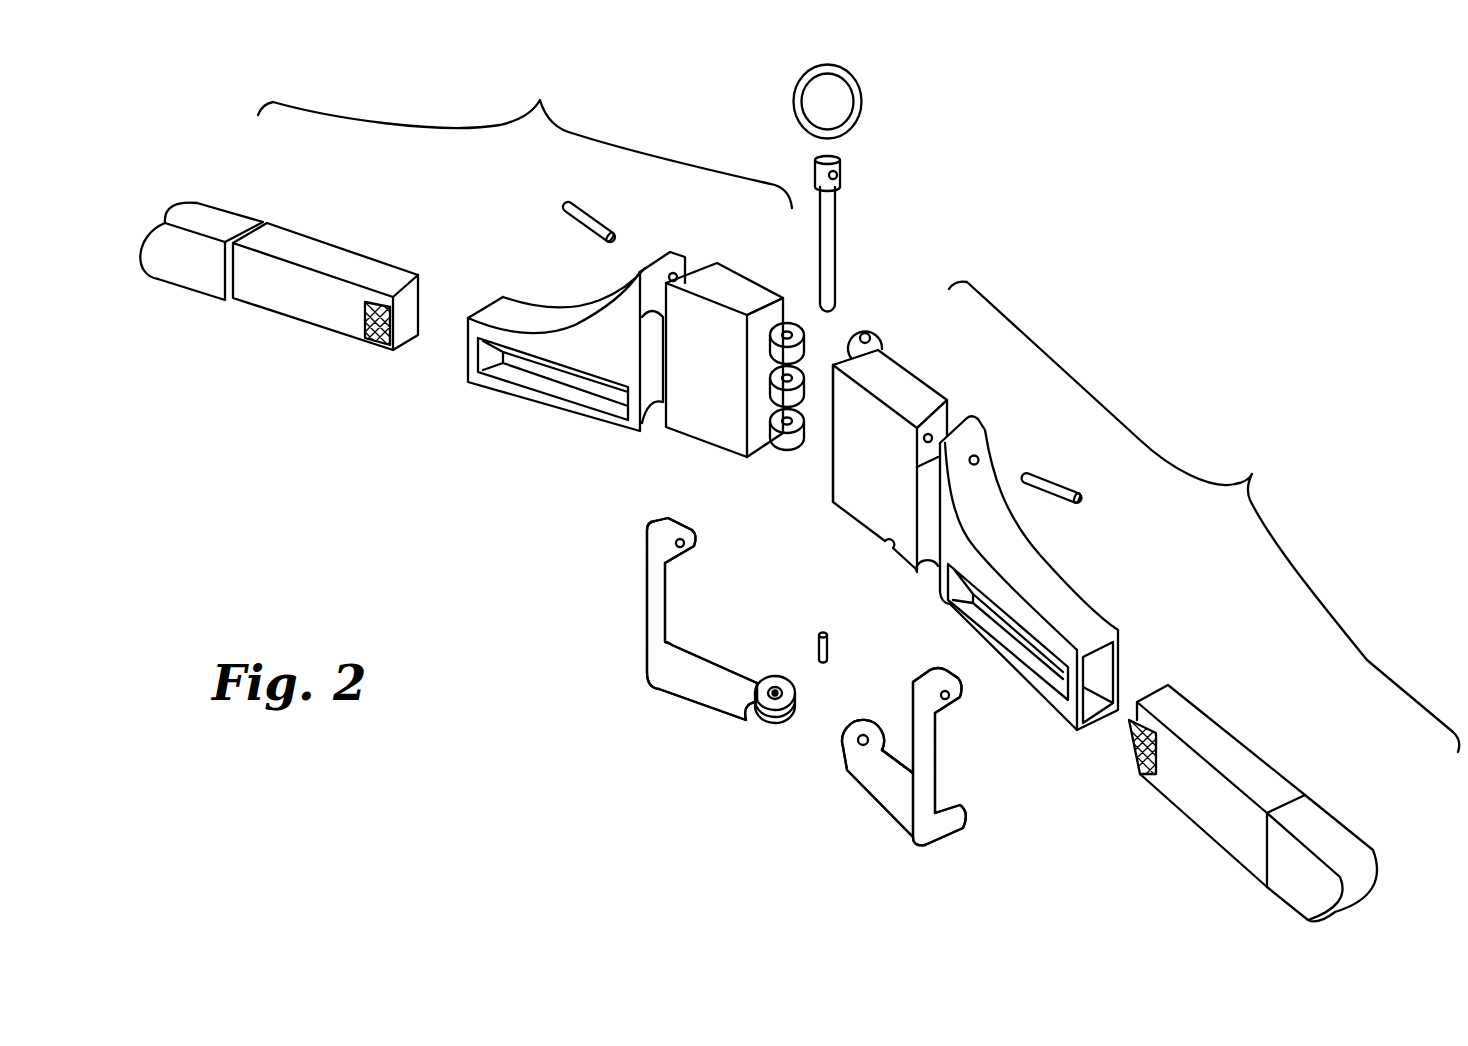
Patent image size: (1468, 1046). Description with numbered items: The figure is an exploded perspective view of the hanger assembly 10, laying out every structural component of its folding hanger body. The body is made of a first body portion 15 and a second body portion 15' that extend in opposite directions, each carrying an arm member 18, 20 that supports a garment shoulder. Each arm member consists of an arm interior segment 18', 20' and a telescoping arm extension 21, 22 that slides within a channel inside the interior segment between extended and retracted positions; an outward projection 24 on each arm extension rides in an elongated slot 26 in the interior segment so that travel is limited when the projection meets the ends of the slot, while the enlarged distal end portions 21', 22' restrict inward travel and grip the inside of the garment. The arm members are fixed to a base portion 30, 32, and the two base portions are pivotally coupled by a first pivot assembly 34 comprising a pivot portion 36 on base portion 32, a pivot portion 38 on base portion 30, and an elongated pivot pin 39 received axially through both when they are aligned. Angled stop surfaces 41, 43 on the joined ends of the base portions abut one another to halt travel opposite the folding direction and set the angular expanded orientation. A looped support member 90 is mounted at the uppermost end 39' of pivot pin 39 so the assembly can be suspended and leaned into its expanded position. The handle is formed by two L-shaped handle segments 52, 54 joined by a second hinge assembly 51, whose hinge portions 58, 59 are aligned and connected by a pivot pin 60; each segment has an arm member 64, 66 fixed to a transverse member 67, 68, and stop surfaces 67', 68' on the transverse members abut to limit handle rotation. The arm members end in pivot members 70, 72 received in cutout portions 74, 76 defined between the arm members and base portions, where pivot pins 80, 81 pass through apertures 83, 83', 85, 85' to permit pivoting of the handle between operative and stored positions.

The hanger assembly 10 is at (988, 167).
The first body portion 15 is at (1204, 517).
The second body portion 15' is at (525, 136).
The arm member 18 is at (1114, 586).
The arm interior segment 18' is at (1044, 573).
The arm member 20 is at (537, 290).
The arm interior segment 20' is at (556, 294).
The arm extension 21 is at (1221, 786).
The distal end portion 21' is at (1337, 841).
The arm extension 22 is at (325, 276).
The distal end portion 22' is at (212, 237).
The outward projection 24 is at (360, 320).
The elongated slot 26 is at (543, 388).
The base portion 30 is at (876, 501).
The base portion 32 is at (703, 407).
The first pivot assembly 34 is at (860, 302).
The pivot portion 36 is at (788, 326).
The pivot portion 38 is at (877, 325).
The pivot pin 39 is at (860, 247).
The uppermost end 39' is at (870, 155).
The stop surface 41 is at (833, 470).
The stop surface 43 is at (758, 438).
The second hinge assembly 51 is at (778, 745).
The handle segment 52 is at (872, 808).
The handle segment 54 is at (701, 707).
The hinge portion 58 is at (863, 727).
The hinge portion 59 is at (768, 676).
The pivot pin 60 is at (838, 641).
The arm member 64 is at (937, 770).
The arm member 66 is at (645, 608).
The transverse member 67 is at (851, 792).
The stop surface 67' is at (836, 768).
The transverse member 68 is at (675, 681).
The stop surface 68' is at (729, 724).
The pivot member 70 is at (943, 672).
The pivot member 72 is at (680, 523).
The cutout portion 74 is at (970, 402).
The cutout portion 76 is at (707, 262).
The pivot pin 80 is at (1053, 478).
The pivot pin 81 is at (594, 217).
The aperture 83 is at (987, 410).
The aperture 83' is at (974, 709).
The aperture 85 is at (683, 251).
The aperture 85' is at (720, 553).
The support member 90 is at (862, 93).